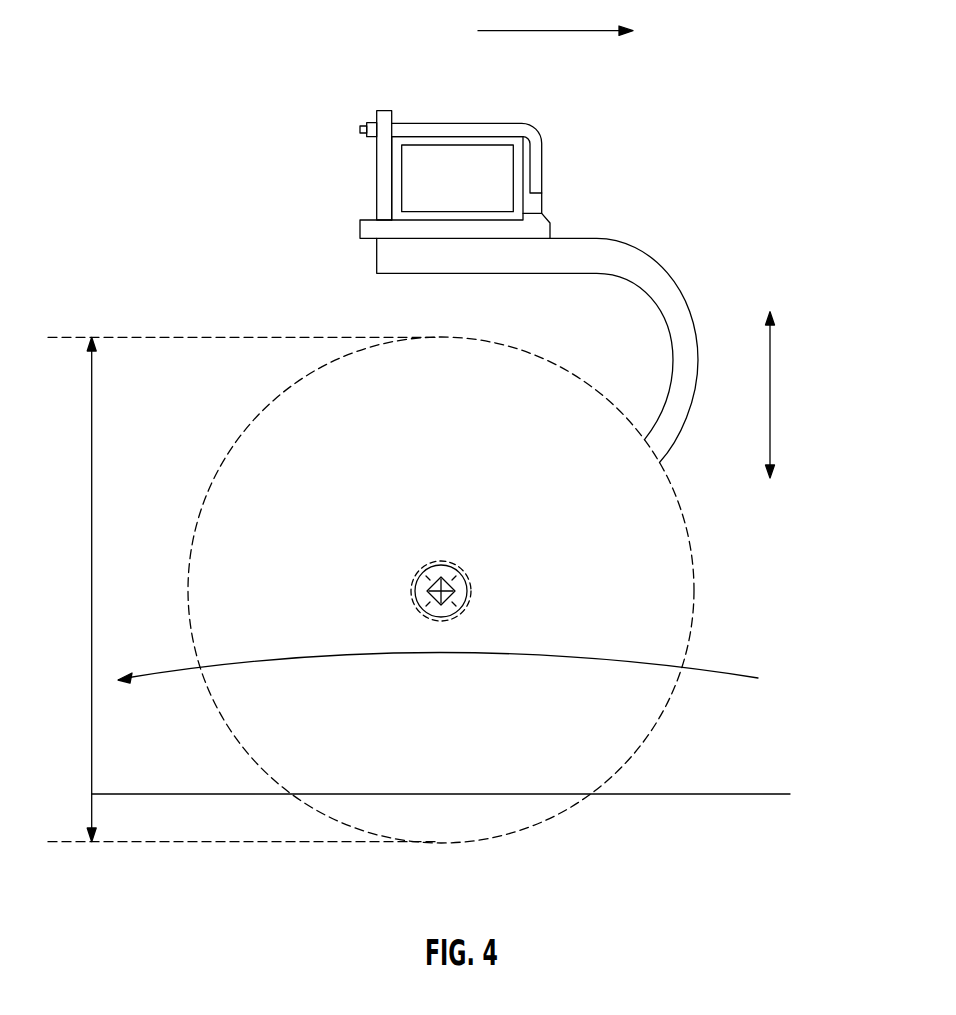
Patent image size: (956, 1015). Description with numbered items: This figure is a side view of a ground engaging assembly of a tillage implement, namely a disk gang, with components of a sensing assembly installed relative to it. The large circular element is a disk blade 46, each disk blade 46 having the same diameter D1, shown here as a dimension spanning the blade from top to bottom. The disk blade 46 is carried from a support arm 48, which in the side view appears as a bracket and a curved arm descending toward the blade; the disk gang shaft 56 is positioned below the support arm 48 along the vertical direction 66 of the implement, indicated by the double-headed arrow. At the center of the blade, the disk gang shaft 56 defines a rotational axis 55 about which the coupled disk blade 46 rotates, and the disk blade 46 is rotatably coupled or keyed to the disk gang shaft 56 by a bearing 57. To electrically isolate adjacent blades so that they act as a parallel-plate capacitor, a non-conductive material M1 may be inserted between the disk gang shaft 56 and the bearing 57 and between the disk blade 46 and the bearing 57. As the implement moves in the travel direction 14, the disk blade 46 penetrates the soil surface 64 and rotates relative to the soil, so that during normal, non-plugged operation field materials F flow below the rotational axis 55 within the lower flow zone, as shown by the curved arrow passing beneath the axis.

The direction of travel 14 is at (583, 32).
The disk blade 46 is at (673, 543).
The support arm 48 is at (455, 142).
The rotational axis 55 is at (416, 600).
The disk gang shaft 56 is at (450, 598).
The bearing 57 is at (453, 567).
The soil surface 64 is at (155, 795).
The vertical direction 66 is at (771, 380).
The diameter D1 is at (244, 589).
The field materials F is at (470, 657).
The non-conductive material M1 is at (415, 578).